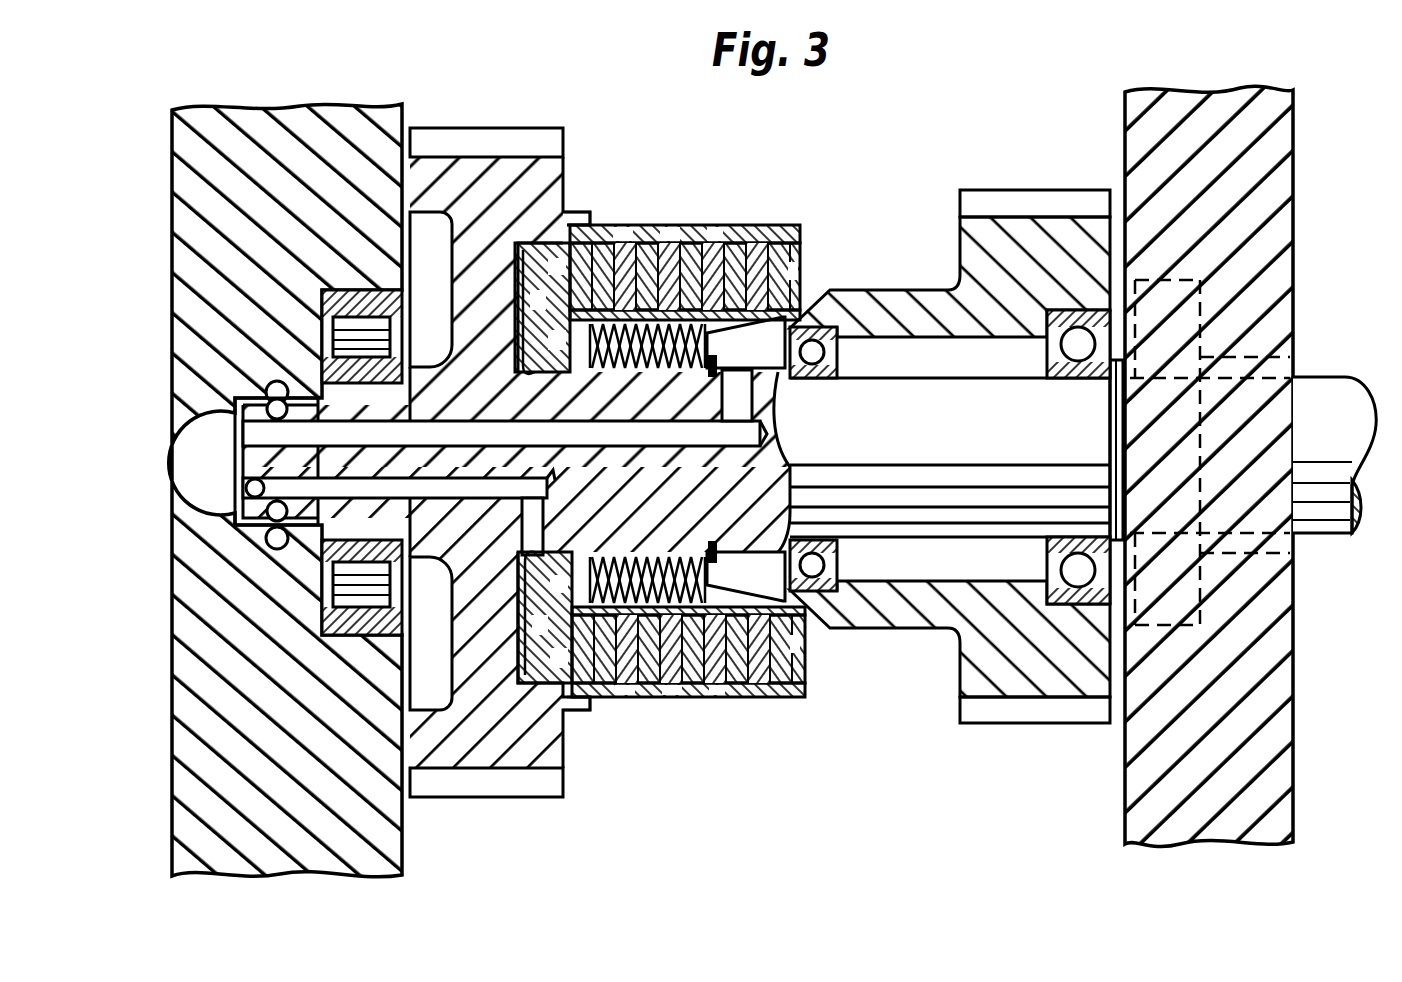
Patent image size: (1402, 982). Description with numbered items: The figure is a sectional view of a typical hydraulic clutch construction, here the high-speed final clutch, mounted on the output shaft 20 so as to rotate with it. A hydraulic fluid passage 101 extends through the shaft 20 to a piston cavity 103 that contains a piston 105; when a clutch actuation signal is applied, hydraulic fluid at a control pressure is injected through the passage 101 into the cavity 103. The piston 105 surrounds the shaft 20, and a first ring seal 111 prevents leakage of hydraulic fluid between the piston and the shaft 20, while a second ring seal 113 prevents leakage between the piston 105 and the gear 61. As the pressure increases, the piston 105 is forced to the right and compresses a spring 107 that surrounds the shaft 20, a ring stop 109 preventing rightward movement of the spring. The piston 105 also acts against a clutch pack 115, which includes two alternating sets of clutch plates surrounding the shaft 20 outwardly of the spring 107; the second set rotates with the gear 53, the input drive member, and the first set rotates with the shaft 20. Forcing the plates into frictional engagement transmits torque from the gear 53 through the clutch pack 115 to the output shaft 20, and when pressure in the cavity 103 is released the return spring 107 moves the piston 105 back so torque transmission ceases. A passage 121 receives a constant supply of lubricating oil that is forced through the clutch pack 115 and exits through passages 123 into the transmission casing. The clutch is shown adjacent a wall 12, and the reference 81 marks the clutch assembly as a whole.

The wall 12 is at (398, 832).
The output shaft 20 is at (1317, 398).
The gear 53 is at (1027, 205).
The gear 61 is at (527, 785).
The clutch assembly 81 is at (702, 454).
The hydraulic fluid passage 101 is at (560, 487).
The piston cavity 103 is at (528, 366).
The piston 105 is at (540, 222).
The spring 107 is at (806, 312).
The ring stop 109 is at (790, 378).
The first ring seal 111 is at (570, 375).
The second ring seal 113 is at (530, 248).
The clutch pack 115 is at (745, 224).
The passage 121 is at (757, 440).
The passages 123 is at (722, 196).